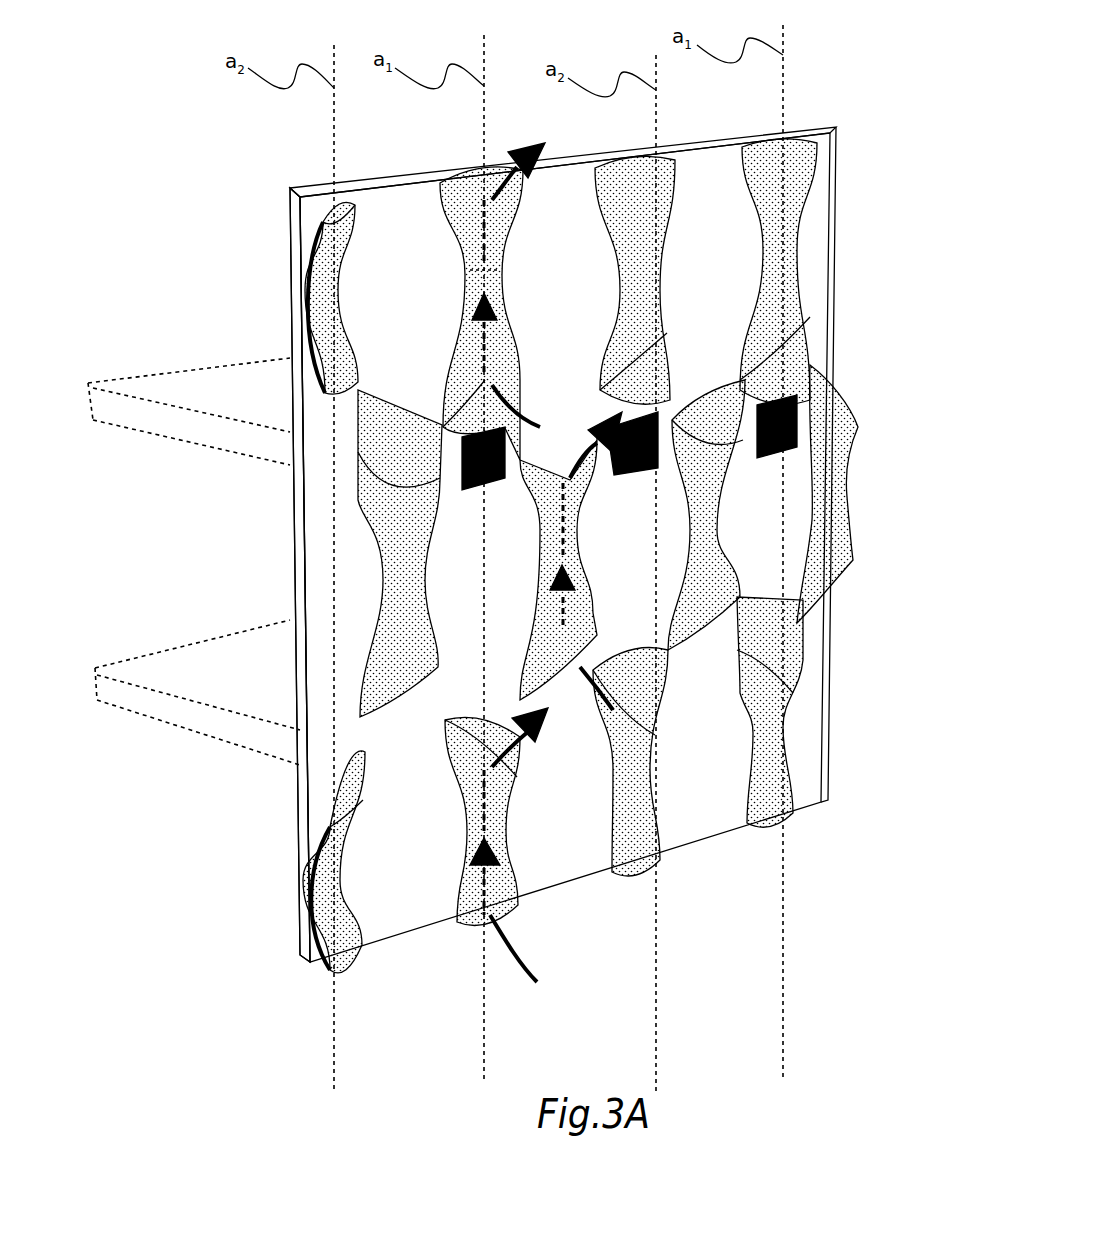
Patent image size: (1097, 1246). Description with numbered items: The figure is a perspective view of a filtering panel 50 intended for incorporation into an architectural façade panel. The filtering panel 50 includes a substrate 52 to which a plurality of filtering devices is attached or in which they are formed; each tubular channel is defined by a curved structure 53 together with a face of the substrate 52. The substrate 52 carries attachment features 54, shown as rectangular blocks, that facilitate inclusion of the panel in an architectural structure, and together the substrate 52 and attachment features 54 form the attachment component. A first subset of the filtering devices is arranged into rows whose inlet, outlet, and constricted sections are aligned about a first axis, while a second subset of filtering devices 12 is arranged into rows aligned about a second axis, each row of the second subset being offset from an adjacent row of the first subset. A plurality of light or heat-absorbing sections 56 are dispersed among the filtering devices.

The filtering panel 50 is at (822, 86).
The substrate 52 is at (310, 593).
The curved structure 53 is at (375, 577).
The attachment features 54 is at (88, 400).
The light or heat-absorbing sections 56 is at (463, 432).
The filtering devices 12 is at (482, 166).